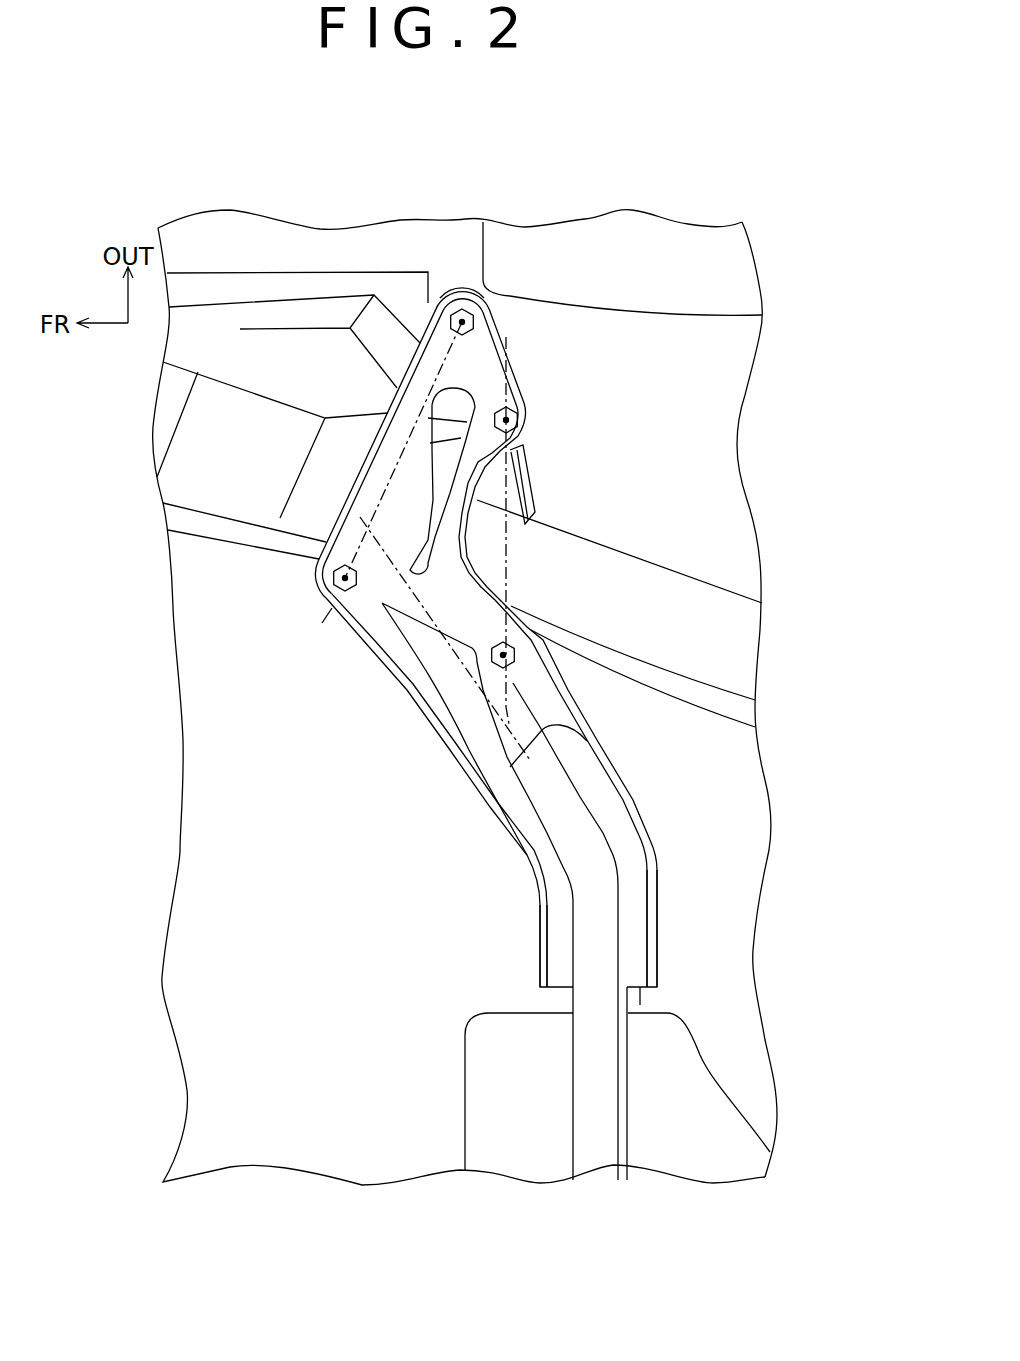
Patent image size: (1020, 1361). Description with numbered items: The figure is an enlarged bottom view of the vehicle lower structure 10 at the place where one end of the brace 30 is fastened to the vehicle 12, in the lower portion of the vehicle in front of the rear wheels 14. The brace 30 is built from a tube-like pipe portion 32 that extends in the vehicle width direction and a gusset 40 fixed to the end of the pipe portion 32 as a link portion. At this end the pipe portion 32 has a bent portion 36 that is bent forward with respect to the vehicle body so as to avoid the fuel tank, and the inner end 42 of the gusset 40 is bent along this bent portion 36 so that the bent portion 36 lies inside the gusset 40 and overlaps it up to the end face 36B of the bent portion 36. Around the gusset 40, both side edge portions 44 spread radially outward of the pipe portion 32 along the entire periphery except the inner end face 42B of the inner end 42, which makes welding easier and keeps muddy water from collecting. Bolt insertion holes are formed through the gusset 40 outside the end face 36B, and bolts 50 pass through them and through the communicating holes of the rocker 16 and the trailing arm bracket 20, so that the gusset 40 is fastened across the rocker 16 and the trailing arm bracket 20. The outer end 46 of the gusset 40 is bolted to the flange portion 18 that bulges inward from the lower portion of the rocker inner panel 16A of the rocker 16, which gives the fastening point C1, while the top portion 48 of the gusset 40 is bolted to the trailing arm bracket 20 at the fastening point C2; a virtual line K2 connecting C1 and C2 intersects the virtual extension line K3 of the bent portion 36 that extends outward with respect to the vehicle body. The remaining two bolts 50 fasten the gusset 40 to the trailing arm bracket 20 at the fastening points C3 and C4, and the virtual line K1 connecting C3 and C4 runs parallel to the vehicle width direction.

The vehicle lower structure 10 is at (394, 754).
The vehicle 12 is at (583, 207).
The rear wheels 14 is at (652, 247).
The rocker 16 is at (273, 235).
The rocker inner panel 16A is at (356, 290).
The flange portion 18 is at (426, 308).
The trailing arm bracket 20 is at (537, 498).
The brace 30 is at (669, 1116).
The pipe portion 32 is at (559, 1110).
The bent portion 36 is at (603, 880).
The end face of the bent portion 36B is at (588, 742).
The gusset 40 is at (360, 654).
The inner end 42 is at (533, 866).
The inner end face 42B is at (641, 994).
The side edge portion 44 is at (652, 930).
The outer end 46 is at (463, 293).
The top portion 48 is at (318, 594).
The bolt 50 is at (474, 320).
The fastening point C1 is at (455, 310).
The fastening point C2 is at (317, 587).
The fastening point C3 is at (519, 420).
The fastening point C4 is at (517, 655).
The virtual line K1 is at (507, 596).
The virtual line K2 is at (382, 480).
The virtual extension line K3 is at (480, 662).